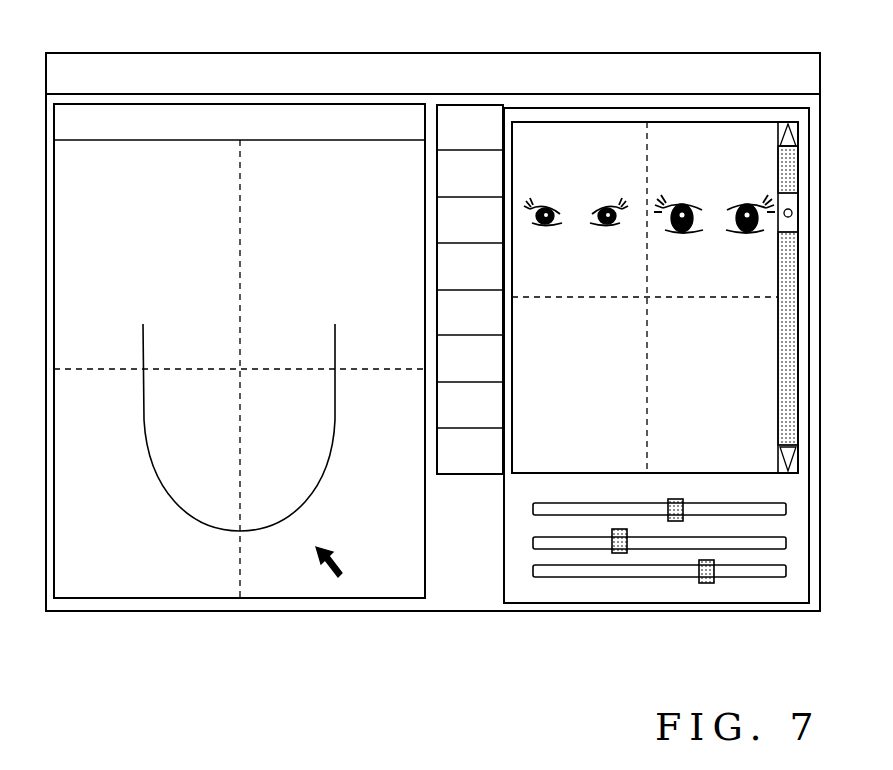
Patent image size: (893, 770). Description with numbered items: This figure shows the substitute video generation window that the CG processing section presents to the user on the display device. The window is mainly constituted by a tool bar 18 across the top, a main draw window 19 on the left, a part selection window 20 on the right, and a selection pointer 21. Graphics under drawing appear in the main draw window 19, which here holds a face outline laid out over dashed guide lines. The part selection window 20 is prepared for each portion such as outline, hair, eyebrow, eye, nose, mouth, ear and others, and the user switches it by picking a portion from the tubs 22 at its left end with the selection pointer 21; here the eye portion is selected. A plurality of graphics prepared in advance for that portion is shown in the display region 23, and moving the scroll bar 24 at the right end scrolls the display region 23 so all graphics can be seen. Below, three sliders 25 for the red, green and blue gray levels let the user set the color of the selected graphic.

The tool bar 18 is at (128, 53).
The main draw window 19 is at (165, 599).
The part selection window 20 is at (542, 604).
The selection pointer 21 is at (337, 561).
The tubs 22 is at (465, 475).
The display region 23 is at (550, 133).
The scroll bar 24 is at (792, 430).
The sliders 25 is at (587, 578).